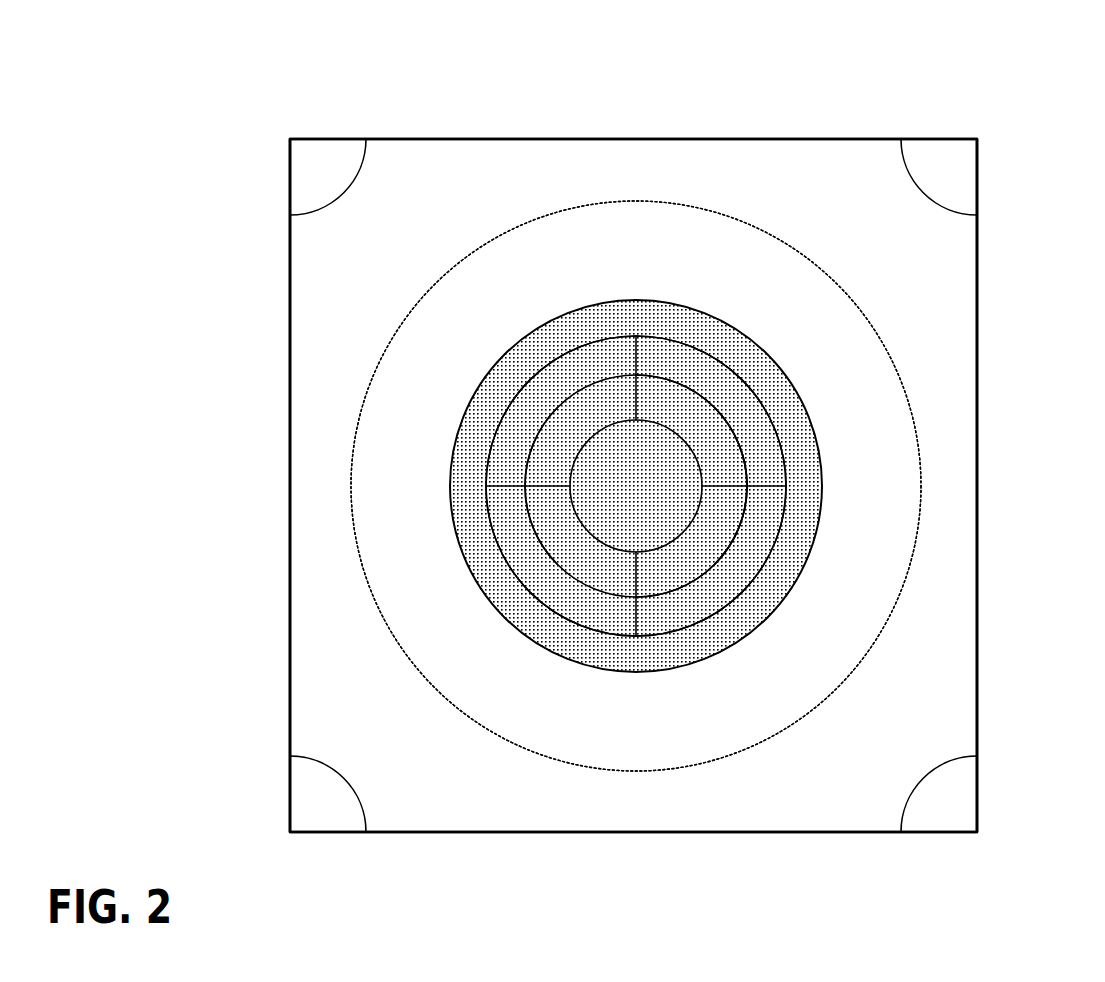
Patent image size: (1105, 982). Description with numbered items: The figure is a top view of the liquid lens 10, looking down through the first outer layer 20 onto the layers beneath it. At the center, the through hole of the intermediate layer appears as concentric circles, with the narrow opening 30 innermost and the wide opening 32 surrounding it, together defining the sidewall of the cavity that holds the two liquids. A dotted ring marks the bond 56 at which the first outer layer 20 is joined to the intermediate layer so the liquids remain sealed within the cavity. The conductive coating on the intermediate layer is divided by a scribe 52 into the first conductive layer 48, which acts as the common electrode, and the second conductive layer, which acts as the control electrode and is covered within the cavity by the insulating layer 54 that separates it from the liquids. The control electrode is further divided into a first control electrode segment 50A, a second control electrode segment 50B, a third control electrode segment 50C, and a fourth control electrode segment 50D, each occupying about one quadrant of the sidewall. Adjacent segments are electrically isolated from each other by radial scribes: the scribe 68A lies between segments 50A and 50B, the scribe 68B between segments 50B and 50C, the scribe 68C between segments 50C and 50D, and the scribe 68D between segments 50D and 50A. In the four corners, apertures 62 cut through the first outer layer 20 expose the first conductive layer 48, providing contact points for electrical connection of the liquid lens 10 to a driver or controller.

The liquid lens 10 is at (410, 88).
The first outer layer 20 is at (932, 290).
The narrow opening 30 is at (700, 440).
The wide opening 32 is at (728, 487).
The first conductive layer 48 is at (513, 263).
The first control electrode segment 50A is at (563, 437).
The second control electrode segment 50B is at (680, 412).
The third control electrode segment 50C is at (707, 538).
The fourth control electrode segment 50D is at (567, 543).
The scribe 52 is at (820, 507).
The insulating layer 54 is at (802, 473).
The bond 56 is at (618, 200).
The aperture 62 is at (305, 170).
The scribe 68A is at (680, 415).
The scribe 68B is at (790, 448).
The scribe 68C is at (677, 585).
The scribe 68D is at (573, 457).